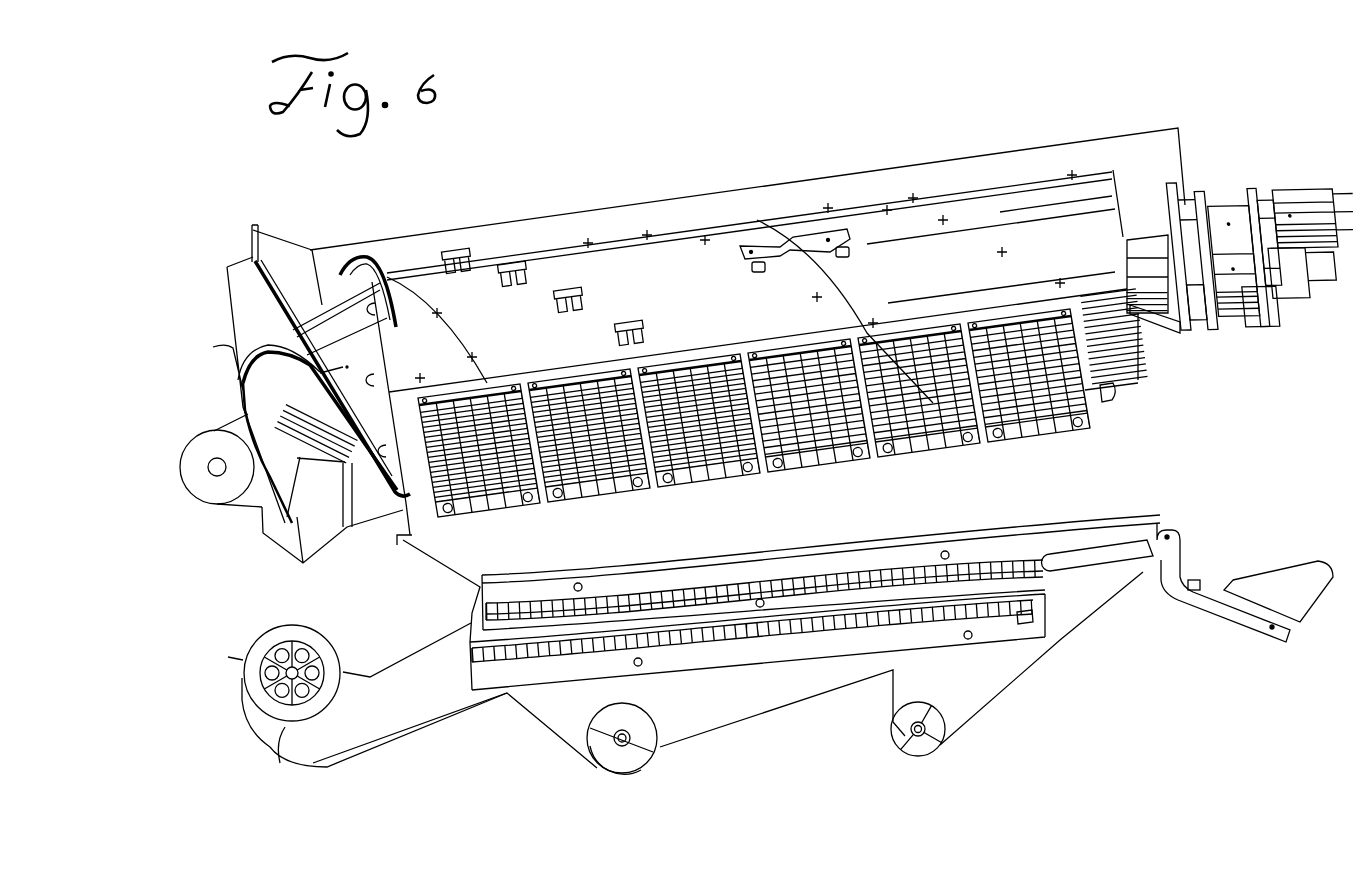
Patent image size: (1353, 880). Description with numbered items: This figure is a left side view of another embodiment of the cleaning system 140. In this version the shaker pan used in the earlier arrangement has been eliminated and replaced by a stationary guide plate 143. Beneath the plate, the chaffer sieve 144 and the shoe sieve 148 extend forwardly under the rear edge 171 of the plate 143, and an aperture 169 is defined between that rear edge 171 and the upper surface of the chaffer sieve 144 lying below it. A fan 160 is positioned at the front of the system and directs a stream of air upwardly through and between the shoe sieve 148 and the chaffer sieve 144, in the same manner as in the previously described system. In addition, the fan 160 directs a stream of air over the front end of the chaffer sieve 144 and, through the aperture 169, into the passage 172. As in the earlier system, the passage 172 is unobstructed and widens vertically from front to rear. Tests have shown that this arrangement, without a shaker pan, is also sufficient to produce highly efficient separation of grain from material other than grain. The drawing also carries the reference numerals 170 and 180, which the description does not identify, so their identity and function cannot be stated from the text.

The cleaning system 140 is at (367, 573).
The stationary guide plate 143 is at (470, 580).
The chaffer sieve 144 is at (853, 573).
The shoe sieve 148 is at (947, 620).
The fan 160 is at (272, 740).
The aperture 169 is at (478, 598).
The side frame plate 170 is at (972, 712).
The rear edge 171 is at (512, 600).
The passage 172 is at (730, 530).
The pulley 180 is at (905, 732).